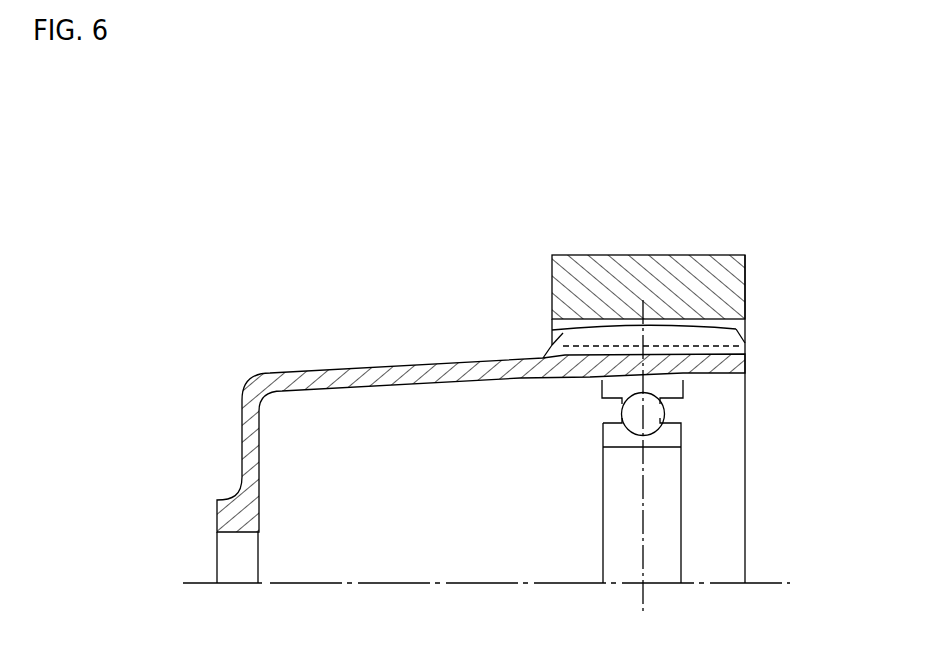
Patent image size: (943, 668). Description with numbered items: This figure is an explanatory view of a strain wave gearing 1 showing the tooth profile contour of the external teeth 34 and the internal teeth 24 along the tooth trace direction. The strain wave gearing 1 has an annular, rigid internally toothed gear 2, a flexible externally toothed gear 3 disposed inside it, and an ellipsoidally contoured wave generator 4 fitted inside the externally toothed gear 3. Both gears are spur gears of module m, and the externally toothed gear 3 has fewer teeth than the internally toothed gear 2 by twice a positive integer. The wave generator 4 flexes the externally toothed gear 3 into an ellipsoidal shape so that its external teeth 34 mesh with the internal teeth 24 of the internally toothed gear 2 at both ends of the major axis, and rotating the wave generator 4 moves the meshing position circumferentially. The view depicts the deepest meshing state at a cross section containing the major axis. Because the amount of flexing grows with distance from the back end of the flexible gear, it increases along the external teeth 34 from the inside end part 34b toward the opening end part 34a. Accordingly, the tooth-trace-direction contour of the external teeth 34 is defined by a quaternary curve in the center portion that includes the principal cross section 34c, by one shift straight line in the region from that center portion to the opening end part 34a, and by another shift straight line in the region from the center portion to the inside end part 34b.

The strain wave gearing 1 is at (263, 250).
The rigid internally toothed gear 2 is at (533, 268).
The flexible externally toothed gear 3 is at (283, 352).
The wave generator 4 is at (565, 501).
The internal teeth 24 is at (708, 318).
The external teeth 34 is at (703, 338).
The opening end part 34a is at (745, 330).
The inside end part 34b is at (552, 329).
The principal cross section 34c is at (639, 328).